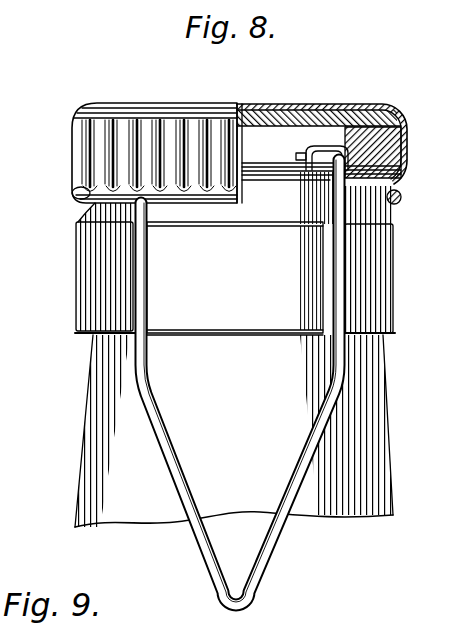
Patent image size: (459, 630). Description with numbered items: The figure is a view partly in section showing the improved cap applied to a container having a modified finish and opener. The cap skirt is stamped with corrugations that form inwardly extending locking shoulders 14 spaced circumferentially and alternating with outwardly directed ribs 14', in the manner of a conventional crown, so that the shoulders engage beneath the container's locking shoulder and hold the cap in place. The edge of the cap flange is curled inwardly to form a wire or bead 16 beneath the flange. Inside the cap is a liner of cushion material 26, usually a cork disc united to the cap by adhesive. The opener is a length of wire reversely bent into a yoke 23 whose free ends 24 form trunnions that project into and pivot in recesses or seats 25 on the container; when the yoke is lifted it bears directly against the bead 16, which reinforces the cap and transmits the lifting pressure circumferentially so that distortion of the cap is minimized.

The locking shoulders 14 is at (348, 153).
The outwardly directed ribs 14' is at (128, 153).
The wire or bead 16 is at (74, 191).
The yoke 23 is at (172, 453).
The free ends 24 is at (350, 140).
The recesses or seats 25 is at (314, 150).
The liner of cushion material 26 is at (258, 118).